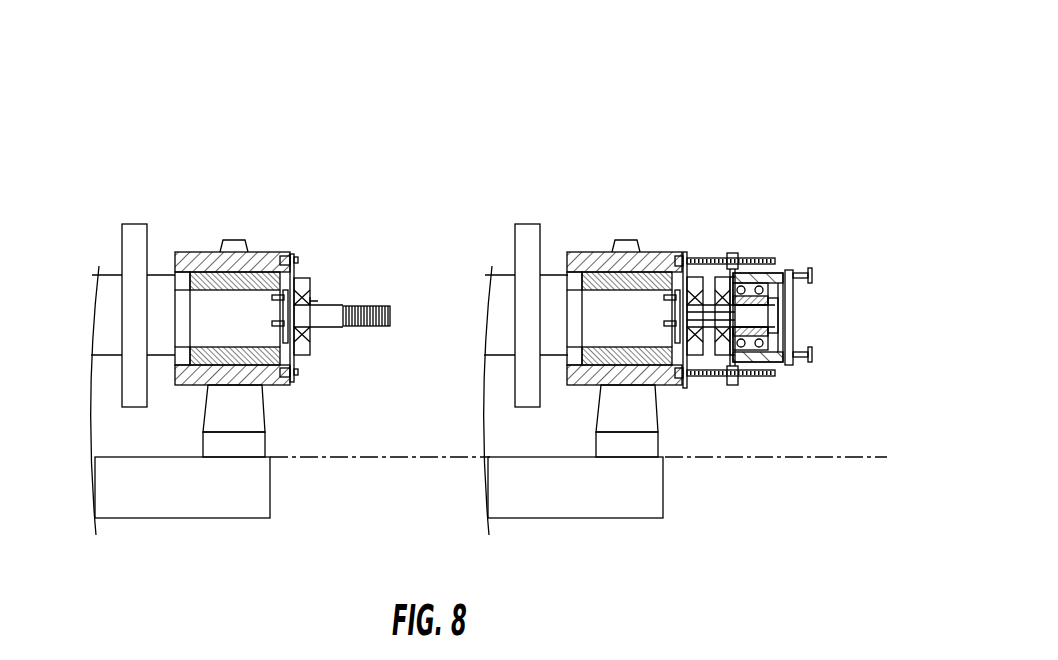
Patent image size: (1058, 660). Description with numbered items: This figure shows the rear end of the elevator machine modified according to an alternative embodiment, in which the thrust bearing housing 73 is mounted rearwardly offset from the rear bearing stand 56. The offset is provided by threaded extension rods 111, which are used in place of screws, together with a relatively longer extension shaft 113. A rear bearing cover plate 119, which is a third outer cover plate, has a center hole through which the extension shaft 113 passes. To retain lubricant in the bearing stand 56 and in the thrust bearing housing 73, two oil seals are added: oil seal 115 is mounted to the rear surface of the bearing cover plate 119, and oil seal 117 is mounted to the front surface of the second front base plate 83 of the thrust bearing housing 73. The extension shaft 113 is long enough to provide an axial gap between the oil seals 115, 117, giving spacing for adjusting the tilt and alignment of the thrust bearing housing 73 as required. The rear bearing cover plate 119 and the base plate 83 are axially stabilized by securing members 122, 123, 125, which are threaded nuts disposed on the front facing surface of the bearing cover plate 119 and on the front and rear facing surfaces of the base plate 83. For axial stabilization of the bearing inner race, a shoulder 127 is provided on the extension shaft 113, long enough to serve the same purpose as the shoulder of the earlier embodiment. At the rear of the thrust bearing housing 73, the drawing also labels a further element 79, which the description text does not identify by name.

The rear bearing stand 56 is at (592, 252).
The thrust bearing housing 73 is at (778, 268).
The end flange 79 is at (800, 318).
The second front base plate 83 is at (734, 253).
The threaded extension rods 111 is at (698, 258).
The extension shaft 113 is at (342, 304).
The oil seal 115 is at (307, 278).
The oil seal 117 is at (723, 292).
The rear bearing cover plate 119 is at (293, 255).
The securing member 122 is at (692, 357).
The securing member 123 is at (729, 385).
The securing member 125 is at (737, 385).
The shoulder 127 is at (317, 303).